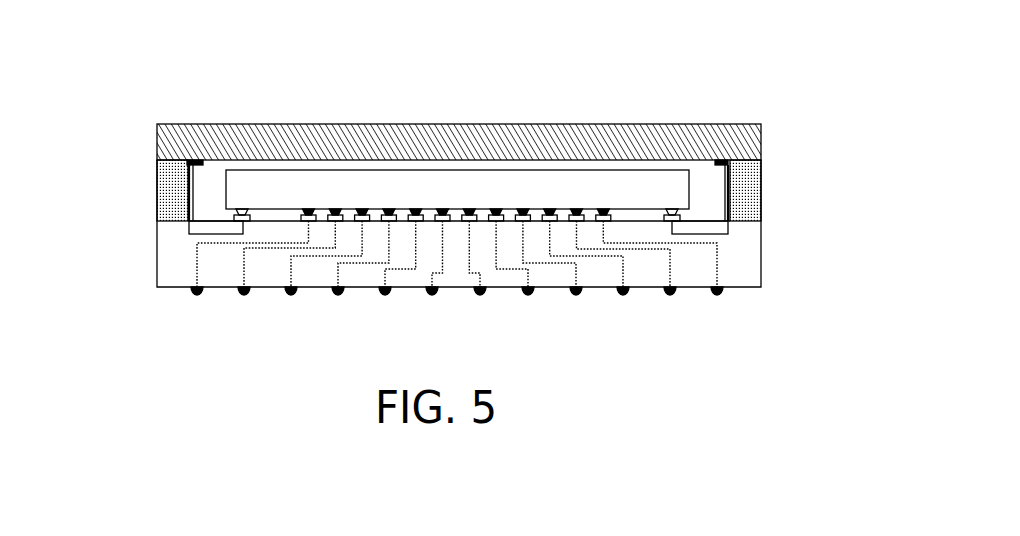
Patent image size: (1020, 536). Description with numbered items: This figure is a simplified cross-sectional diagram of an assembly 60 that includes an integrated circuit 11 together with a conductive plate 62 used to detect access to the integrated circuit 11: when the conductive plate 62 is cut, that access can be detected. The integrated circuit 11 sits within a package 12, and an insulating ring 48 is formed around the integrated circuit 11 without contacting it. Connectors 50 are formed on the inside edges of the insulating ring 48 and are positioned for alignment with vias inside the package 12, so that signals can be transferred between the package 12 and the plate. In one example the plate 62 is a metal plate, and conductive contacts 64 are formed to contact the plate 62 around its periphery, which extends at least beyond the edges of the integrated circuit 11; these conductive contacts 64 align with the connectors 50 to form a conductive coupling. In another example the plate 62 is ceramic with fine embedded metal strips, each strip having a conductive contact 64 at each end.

The assembly 60 is at (456, 163).
The conductive plate 62 is at (420, 124).
The conductive contact 64 is at (722, 161).
The insulating ring 48 is at (813, 192).
The connector 50 is at (192, 198).
The package 12 is at (158, 258).
The integrated circuit 11 is at (567, 198).